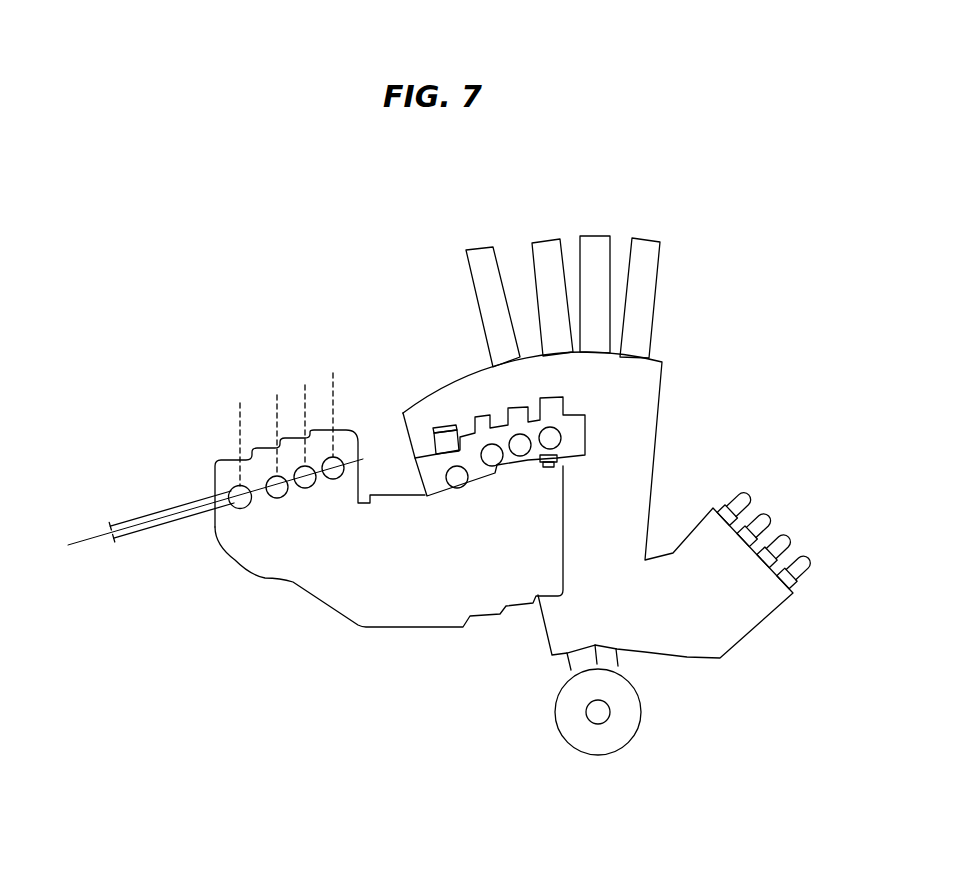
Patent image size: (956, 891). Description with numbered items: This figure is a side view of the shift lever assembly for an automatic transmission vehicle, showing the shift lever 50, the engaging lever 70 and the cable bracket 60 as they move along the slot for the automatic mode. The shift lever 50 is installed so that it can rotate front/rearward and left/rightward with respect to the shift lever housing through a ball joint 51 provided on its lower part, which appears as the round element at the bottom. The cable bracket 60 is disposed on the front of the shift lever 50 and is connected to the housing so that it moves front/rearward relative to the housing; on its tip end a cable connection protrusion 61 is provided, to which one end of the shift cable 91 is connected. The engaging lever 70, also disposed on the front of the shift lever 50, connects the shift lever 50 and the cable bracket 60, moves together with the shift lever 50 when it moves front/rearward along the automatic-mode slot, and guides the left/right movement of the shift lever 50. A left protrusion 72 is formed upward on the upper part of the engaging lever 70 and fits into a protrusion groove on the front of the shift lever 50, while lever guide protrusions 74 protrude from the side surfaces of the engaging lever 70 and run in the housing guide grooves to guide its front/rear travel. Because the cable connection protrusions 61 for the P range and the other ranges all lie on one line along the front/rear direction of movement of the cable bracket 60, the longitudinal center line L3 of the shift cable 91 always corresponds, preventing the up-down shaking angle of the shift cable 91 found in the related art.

The shift lever 50 is at (647, 427).
The ball joint 51 is at (570, 728).
The cable bracket 60 is at (317, 578).
The cable connection protrusion 61 is at (232, 488).
The engaging lever 70 is at (432, 477).
The left protrusion 72 is at (443, 420).
The lever guide protrusion 74 is at (458, 478).
The shift cable 91 is at (148, 515).
The longitudinal center line L3 is at (202, 511).